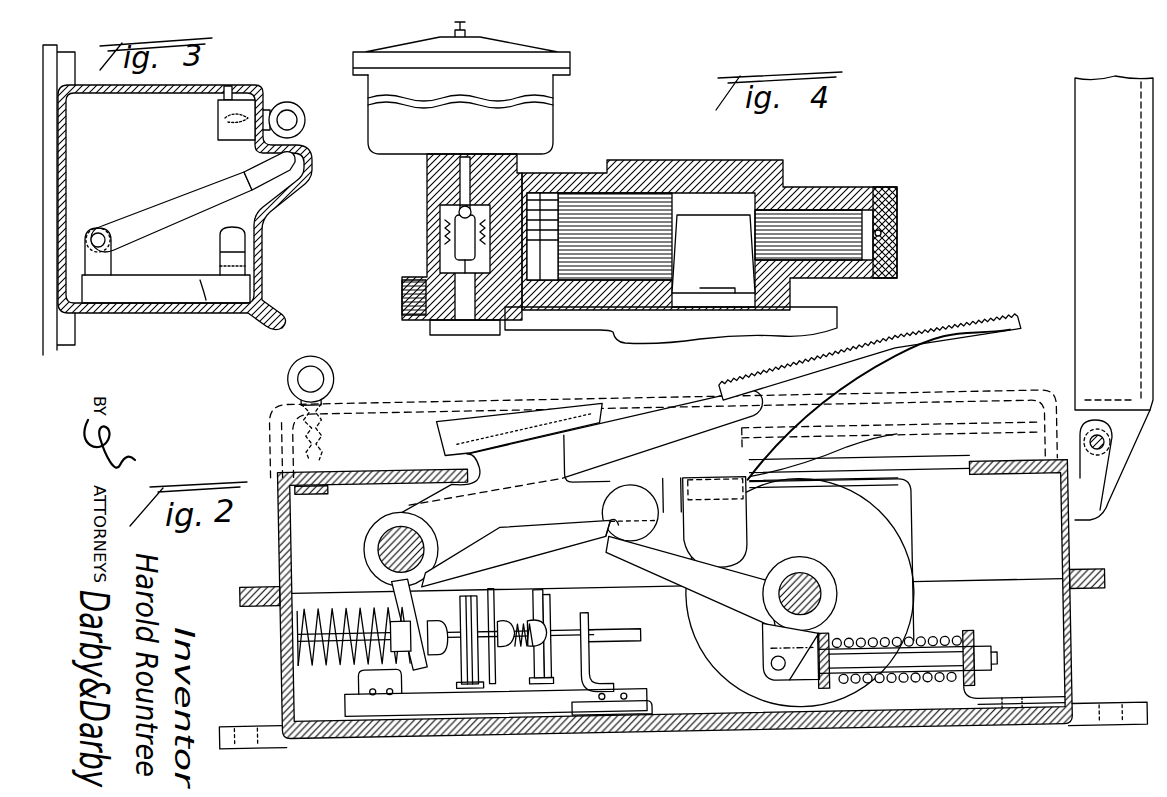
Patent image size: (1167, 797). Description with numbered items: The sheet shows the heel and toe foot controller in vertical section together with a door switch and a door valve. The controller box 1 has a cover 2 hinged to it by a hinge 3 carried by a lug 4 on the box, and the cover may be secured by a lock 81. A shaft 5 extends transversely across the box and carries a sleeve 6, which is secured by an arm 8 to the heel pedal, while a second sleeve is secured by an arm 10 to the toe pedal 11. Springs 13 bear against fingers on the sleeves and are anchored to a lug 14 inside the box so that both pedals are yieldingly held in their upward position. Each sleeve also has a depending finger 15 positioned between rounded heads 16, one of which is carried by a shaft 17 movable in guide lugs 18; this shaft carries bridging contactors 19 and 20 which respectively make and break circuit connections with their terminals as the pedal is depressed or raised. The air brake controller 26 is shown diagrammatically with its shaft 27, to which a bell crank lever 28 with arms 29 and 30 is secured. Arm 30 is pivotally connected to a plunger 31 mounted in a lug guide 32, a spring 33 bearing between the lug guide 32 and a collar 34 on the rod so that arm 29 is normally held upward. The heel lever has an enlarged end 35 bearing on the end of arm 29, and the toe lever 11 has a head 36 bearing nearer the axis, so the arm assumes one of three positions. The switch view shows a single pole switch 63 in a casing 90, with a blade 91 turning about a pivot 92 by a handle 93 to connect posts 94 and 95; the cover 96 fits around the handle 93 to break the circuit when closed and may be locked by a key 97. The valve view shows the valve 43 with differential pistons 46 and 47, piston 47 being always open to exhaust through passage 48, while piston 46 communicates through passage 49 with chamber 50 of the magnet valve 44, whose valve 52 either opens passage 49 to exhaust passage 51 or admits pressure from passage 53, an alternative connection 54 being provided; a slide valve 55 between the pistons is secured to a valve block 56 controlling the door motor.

In FIG. 2, the controller box 1 is at (272, 545).
In FIG. 2, the cover 2 is at (398, 392).
In FIG. 2, the hinge 3 is at (1096, 456).
In FIG. 2, the lug 4 is at (1090, 514).
In FIG. 2, the shaft 5 is at (392, 540).
In FIG. 2, the sleeve 6 is at (392, 512).
In FIG. 2, the arm 8 is at (512, 528).
In FIG. 2, the arm 10 is at (666, 452).
In FIG. 2, the toe pedal 11 is at (944, 356).
In FIG. 2, the springs 13 is at (330, 602).
In FIG. 2, the lug 14 is at (312, 662).
In FIG. 2, the depending arm or finger 15 is at (412, 616).
In FIG. 2, the buffers or rounded heads 16 is at (432, 654).
In FIG. 2, the shaft 17 is at (612, 630).
In FIG. 2, the guide lugs 18 is at (590, 617).
In FIG. 2, the contactor 19 is at (500, 600).
In FIG. 2, the contactor 20 is at (544, 603).
In FIG. 2, the air brake controller 26 is at (905, 546).
In FIG. 2, the air brake controller shaft 27 is at (822, 590).
In FIG. 2, the bell crank lever 28 is at (760, 575).
In FIG. 2, the arm 29 is at (740, 610).
In FIG. 2, the arm 30 is at (760, 645).
In FIG. 2, the plunger 31 is at (945, 655).
In FIG. 2, the lug guide 32 is at (982, 650).
In FIG. 2, the spring 33 is at (928, 640).
In FIG. 2, the collar 34 is at (815, 680).
In FIG. 2, the enlarged end 35 is at (632, 532).
In FIG. 2, the head 36 is at (755, 528).
In FIG. 2, the lock 81 is at (292, 375).
In FIG. 3, the single pole switch 63 is at (182, 291).
In FIG. 3, the casing 90 is at (190, 95).
In FIG. 3, the blade 91 is at (164, 208).
In FIG. 3, the pivot 92 is at (98, 230).
In FIG. 3, the handle 93 is at (258, 172).
In FIG. 3, the post or terminal 94 is at (112, 258).
In FIG. 3, the post or terminal 95 is at (220, 250).
In FIG. 3, the cover 96 is at (270, 258).
In FIG. 3, the key 97 is at (294, 113).
In FIG. 4, the valve 43 is at (786, 183).
In FIG. 4, the magnet valve 44 is at (376, 138).
In FIG. 4, the piston 46 is at (562, 166).
In FIG. 4, the piston 47 is at (842, 214).
In FIG. 4, the passage 48 is at (882, 233).
In FIG. 4, the passage 49 is at (515, 320).
In FIG. 4, the chamber 50 is at (440, 216).
In FIG. 4, the passage 51 is at (510, 165).
In FIG. 4, the valve 52 is at (440, 245).
In FIG. 4, the passage 53 is at (671, 325).
In FIG. 4, the connection 54 is at (404, 293).
In FIG. 4, the slide valve 55 is at (718, 222).
In FIG. 4, the valve block 56 is at (832, 316).